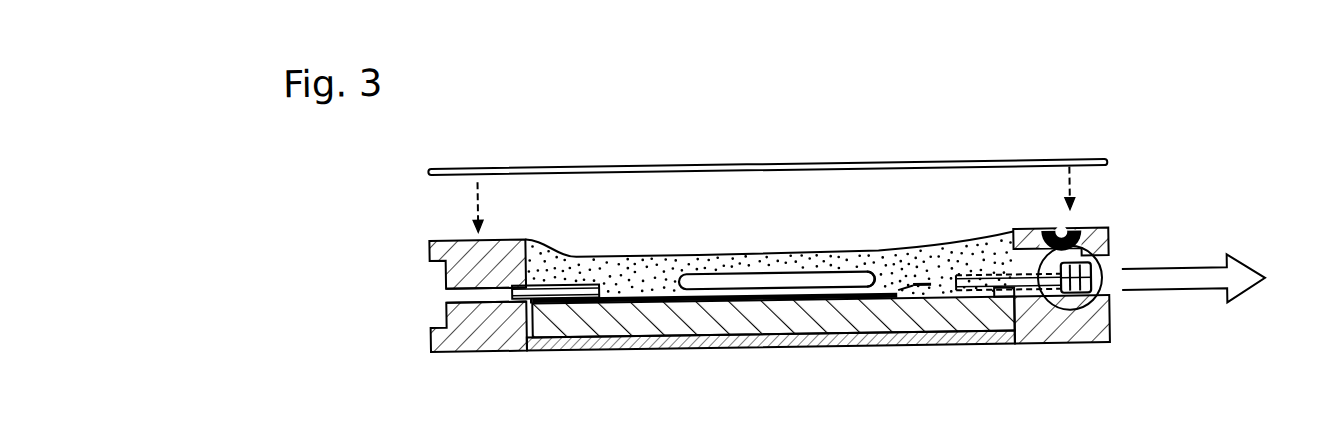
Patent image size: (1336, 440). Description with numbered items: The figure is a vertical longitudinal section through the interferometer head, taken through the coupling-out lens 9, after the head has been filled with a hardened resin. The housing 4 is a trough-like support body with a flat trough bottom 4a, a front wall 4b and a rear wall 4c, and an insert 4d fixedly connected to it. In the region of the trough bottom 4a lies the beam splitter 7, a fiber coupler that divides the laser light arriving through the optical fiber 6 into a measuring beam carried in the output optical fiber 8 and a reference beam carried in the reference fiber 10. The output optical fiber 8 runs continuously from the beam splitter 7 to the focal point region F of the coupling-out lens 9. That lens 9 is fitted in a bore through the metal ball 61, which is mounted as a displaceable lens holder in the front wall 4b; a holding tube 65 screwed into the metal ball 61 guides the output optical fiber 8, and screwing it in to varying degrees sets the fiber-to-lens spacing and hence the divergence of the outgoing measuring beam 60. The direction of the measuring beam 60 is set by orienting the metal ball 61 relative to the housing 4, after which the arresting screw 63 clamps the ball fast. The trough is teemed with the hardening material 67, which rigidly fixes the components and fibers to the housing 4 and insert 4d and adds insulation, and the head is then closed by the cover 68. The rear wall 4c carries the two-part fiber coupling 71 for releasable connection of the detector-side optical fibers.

The housing 4 is at (813, 336).
The trough bottom 4a is at (662, 300).
The front wall 4b is at (1107, 335).
The rear wall 4c is at (487, 331).
The insert 4d is at (757, 323).
The optical fiber 6 is at (624, 300).
The beam splitter 7 is at (724, 284).
The output optical fiber 8 is at (928, 292).
The coupling-out lens 9 is at (1076, 271).
The reference fiber 10 is at (906, 300).
The measuring beam 60 is at (1183, 288).
The metal ball 61 is at (1071, 306).
The arresting screw 63 is at (1060, 239).
The holding tube 65 is at (1006, 295).
The hardening material 67 is at (881, 282).
The cover 68 is at (823, 169).
The fiber coupling 71 is at (437, 290).
The focal point region F is at (1089, 238).